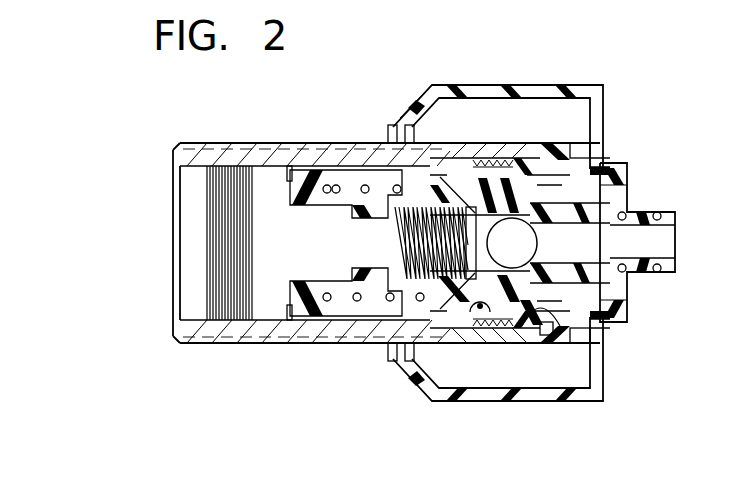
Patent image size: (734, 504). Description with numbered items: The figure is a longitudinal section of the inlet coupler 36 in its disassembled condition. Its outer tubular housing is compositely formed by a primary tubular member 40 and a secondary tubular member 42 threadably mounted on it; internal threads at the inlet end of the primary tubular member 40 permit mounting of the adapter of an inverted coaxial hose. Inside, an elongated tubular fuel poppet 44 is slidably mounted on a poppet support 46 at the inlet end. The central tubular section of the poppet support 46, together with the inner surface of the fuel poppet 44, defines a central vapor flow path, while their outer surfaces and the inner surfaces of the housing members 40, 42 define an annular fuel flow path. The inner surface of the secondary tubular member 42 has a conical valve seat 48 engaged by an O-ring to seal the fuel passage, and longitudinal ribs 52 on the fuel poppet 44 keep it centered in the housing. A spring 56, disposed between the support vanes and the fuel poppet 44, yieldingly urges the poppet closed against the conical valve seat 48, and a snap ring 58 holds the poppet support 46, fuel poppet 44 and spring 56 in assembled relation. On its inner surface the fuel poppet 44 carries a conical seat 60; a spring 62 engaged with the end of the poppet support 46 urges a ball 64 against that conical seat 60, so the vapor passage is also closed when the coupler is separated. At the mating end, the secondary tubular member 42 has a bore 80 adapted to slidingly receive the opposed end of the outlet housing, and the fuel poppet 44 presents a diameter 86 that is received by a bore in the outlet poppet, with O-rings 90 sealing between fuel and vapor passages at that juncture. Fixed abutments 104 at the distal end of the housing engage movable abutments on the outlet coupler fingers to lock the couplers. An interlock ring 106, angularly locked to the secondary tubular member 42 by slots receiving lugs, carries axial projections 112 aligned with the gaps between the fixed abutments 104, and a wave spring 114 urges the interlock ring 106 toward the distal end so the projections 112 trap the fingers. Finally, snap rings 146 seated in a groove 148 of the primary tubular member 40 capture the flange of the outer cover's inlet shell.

The inlet coupler 36 is at (295, 120).
The primary tubular member 40 is at (247, 143).
The secondary tubular member 42 is at (613, 170).
The fuel poppet 44 is at (455, 160).
The poppet support 46 is at (290, 318).
The conical valve seat 48 is at (475, 322).
The longitudinal ribs 52 is at (577, 318).
The spring 56 is at (357, 302).
The snap ring 58 is at (300, 310).
The conical seat 60 is at (535, 247).
The spring 62 is at (433, 213).
The ball 64 is at (542, 206).
The bore 80 is at (622, 178).
The diameter 86 is at (640, 270).
The O-rings 90 is at (640, 214).
The fixed abutments 104 is at (610, 165).
The interlock ring 106 is at (555, 345).
The axial projections 112 is at (590, 338).
The wave spring 114 is at (535, 328).
The snap ring 146 is at (392, 125).
The groove 148 is at (398, 120).